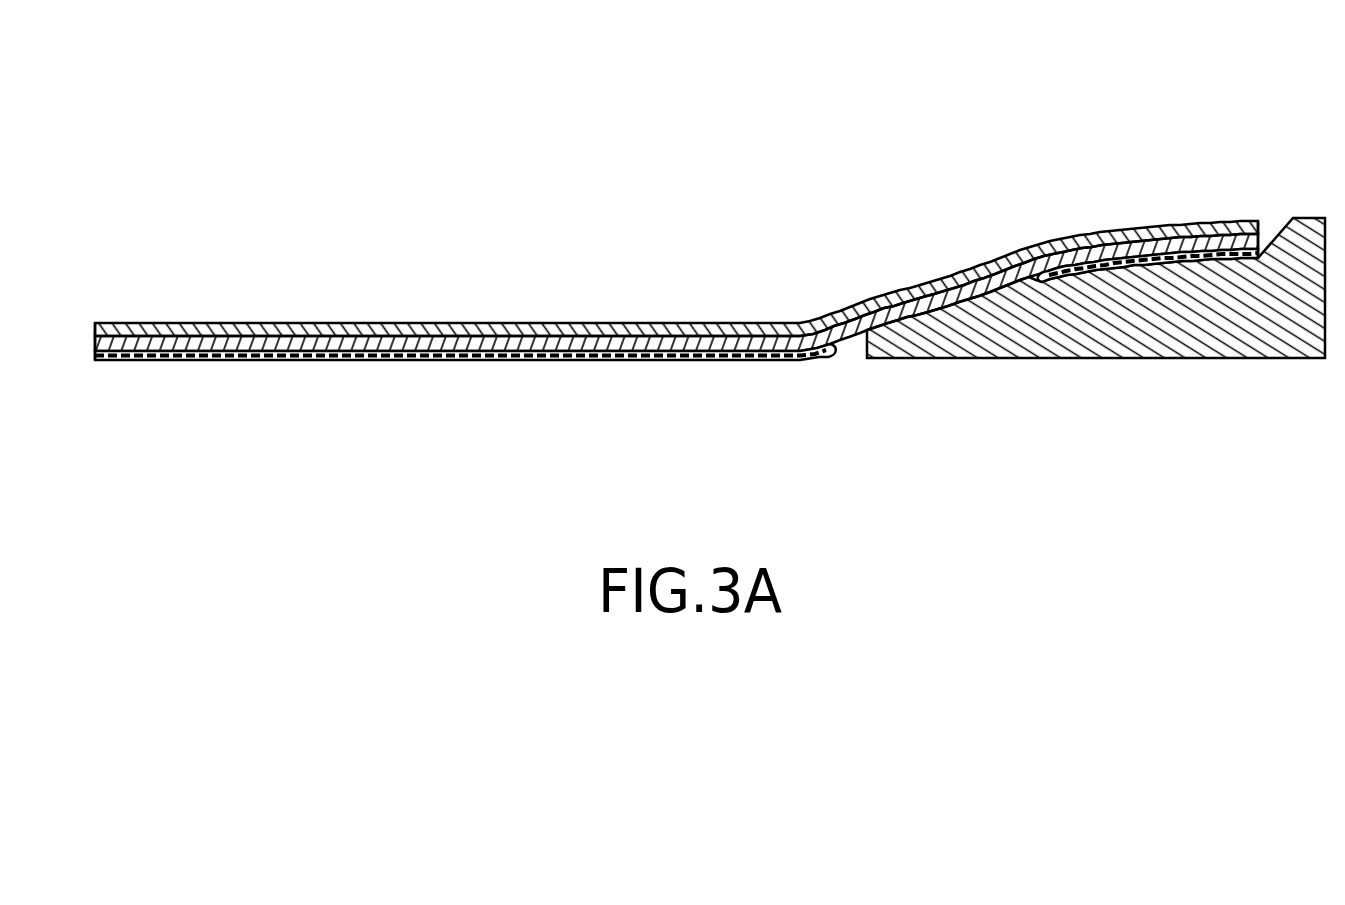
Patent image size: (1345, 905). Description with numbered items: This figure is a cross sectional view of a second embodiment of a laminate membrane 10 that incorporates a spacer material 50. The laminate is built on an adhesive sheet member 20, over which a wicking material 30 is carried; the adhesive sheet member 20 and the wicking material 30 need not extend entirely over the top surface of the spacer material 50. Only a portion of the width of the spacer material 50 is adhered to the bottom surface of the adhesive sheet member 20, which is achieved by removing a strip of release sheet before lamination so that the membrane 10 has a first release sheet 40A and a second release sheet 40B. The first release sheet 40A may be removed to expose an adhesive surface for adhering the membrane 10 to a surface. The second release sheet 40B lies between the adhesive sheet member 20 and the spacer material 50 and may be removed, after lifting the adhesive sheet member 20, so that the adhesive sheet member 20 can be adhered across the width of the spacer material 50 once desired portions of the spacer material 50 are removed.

The membrane 10 is at (205, 157).
The adhesive sheet member 20 is at (95, 345).
The wicking material 30 is at (232, 323).
The first release sheet 40A is at (222, 362).
The second release sheet 40B is at (1243, 257).
The spacer material 50 is at (1222, 338).